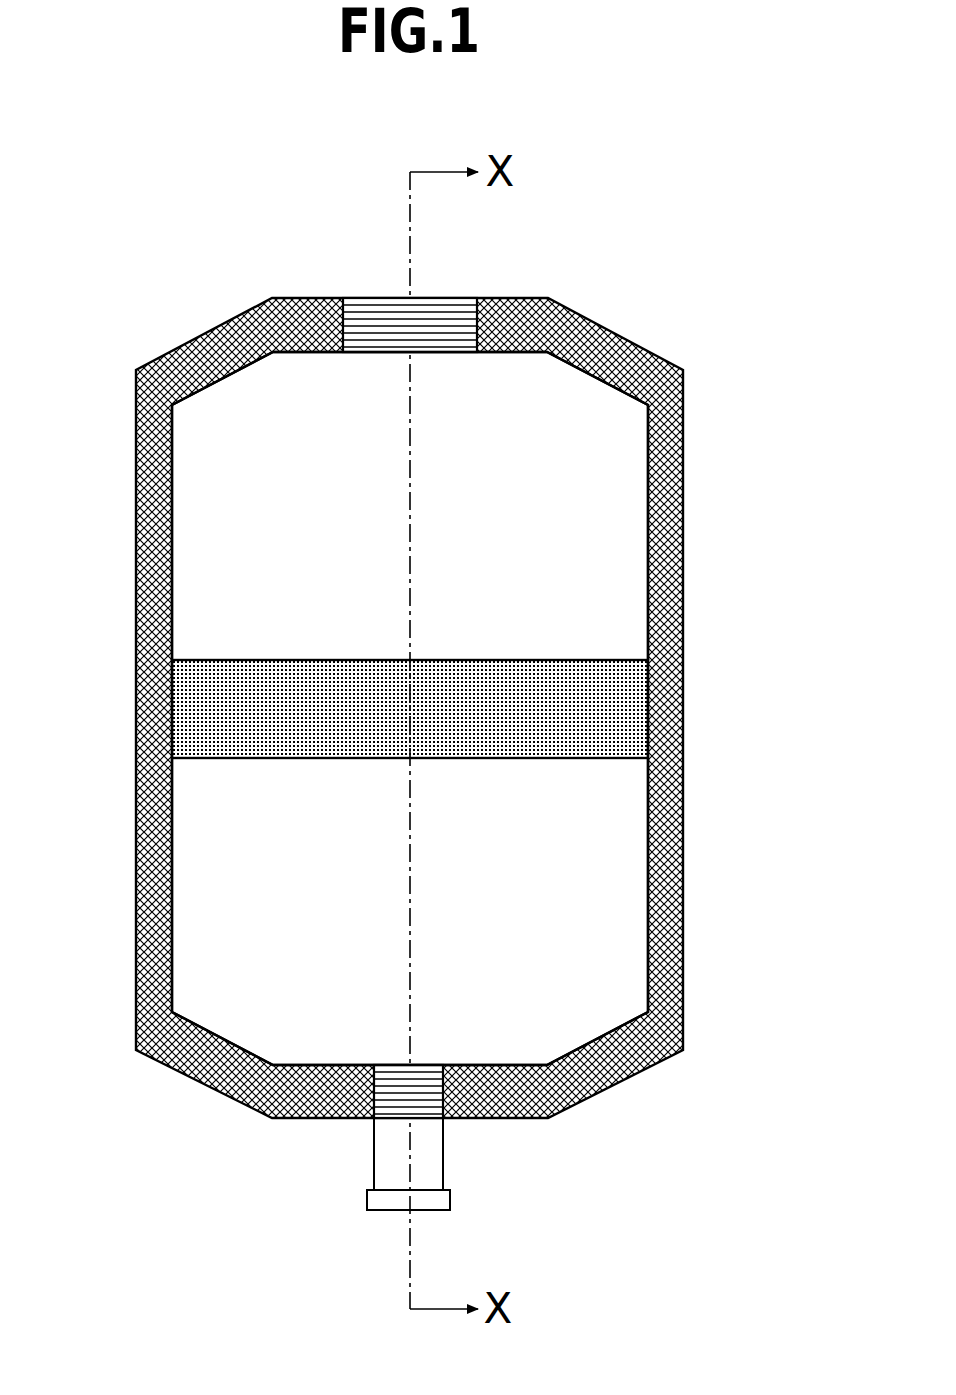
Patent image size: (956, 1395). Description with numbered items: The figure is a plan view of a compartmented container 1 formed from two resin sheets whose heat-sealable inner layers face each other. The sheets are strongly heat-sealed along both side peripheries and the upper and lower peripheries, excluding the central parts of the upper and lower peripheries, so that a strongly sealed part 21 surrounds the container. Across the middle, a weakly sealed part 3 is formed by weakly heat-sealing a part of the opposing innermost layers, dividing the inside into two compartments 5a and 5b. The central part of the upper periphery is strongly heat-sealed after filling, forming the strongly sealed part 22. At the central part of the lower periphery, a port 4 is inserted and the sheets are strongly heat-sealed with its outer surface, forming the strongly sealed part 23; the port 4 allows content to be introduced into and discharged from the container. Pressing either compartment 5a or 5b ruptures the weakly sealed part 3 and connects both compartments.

The compartmented container 1 is at (458, 692).
The strongly sealed part 21 is at (173, 336).
The strongly sealed part 22 is at (378, 312).
The strongly sealed part 23 is at (430, 1103).
The port 4 is at (385, 1133).
The weakly sealed part 3 is at (620, 726).
The compartment 5a is at (482, 537).
The compartment 5b is at (498, 877).